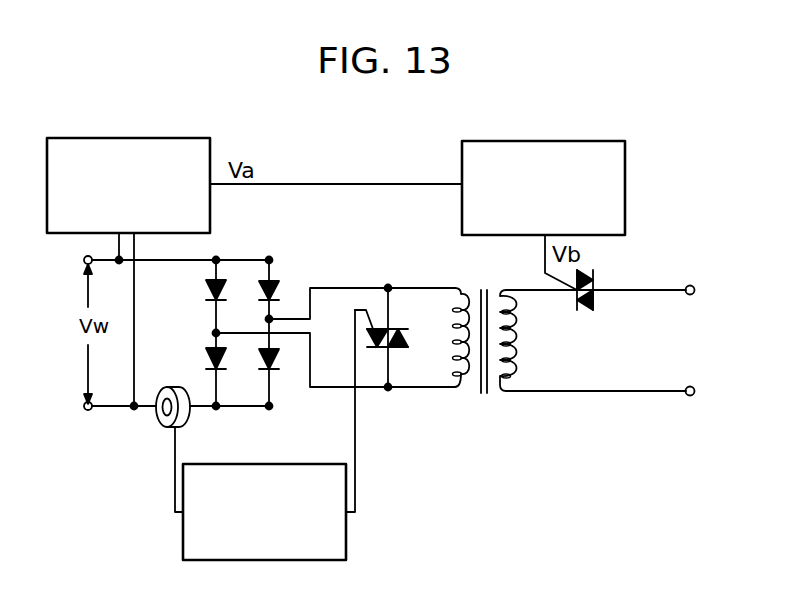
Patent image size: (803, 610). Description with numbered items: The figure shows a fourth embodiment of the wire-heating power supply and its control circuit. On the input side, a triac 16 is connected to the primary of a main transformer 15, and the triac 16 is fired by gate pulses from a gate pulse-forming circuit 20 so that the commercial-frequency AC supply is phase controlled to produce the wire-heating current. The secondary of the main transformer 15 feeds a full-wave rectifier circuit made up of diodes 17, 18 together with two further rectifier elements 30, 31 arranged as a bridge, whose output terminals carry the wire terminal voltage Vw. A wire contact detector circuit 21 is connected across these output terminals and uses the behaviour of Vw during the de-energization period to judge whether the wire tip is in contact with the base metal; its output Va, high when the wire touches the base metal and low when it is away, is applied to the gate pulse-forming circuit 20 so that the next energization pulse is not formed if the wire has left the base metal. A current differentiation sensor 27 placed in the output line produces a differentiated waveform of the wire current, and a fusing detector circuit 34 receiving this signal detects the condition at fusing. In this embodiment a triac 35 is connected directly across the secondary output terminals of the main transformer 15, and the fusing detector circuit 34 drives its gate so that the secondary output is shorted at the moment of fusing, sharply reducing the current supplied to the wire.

The wire contact detector circuit 21 is at (203, 139).
The gate pulse-forming circuit 20 is at (626, 162).
The diode 17 is at (207, 292).
The diode 18 is at (279, 291).
The diode 30 is at (207, 361).
The diode 31 is at (277, 362).
The current differentiation sensor 27 is at (155, 420).
The triac 35 is at (400, 328).
The main transformer 15 is at (483, 397).
The triac 16 is at (596, 282).
The fusing detector circuit 34 is at (347, 537).